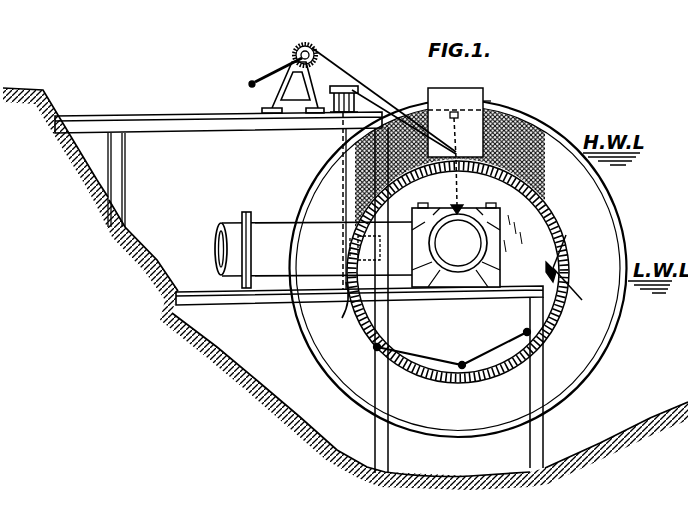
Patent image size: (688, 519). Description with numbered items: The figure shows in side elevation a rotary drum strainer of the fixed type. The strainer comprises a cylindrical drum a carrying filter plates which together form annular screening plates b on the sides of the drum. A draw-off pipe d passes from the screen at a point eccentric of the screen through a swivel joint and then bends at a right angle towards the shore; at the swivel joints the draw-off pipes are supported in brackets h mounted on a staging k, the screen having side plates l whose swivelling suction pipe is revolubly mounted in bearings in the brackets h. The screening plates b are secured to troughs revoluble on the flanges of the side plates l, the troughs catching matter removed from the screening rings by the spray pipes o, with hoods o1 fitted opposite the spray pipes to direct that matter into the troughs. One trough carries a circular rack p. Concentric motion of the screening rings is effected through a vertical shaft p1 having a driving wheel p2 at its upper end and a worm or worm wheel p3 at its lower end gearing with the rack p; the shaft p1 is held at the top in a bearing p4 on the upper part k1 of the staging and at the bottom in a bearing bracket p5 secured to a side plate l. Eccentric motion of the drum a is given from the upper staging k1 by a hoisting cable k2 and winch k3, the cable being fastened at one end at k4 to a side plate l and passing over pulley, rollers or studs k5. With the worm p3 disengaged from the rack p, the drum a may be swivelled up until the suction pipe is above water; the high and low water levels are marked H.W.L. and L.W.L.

The cylindrical drum a is at (606, 204).
The annular screening plates b is at (518, 126).
The draw-off pipe d is at (272, 223).
The brackets h is at (500, 224).
The staging k is at (266, 305).
The upper part of the staging k1 is at (264, 90).
The hoisting cable k2 is at (582, 308).
The winch k3 is at (290, 56).
The cable fastening k4 is at (378, 352).
The pulley, rollers or studs k5 is at (526, 290).
The side plates l is at (490, 344).
The spray pipes o is at (428, 101).
The hoods o1 is at (498, 98).
The circular rack p is at (464, 378).
The vertical shaft p1 is at (332, 201).
The driving wheel p2 is at (343, 100).
The worm or worm wheel p3 is at (338, 314).
The bearing p4 is at (404, 109).
The bearing bracket p5 is at (382, 248).